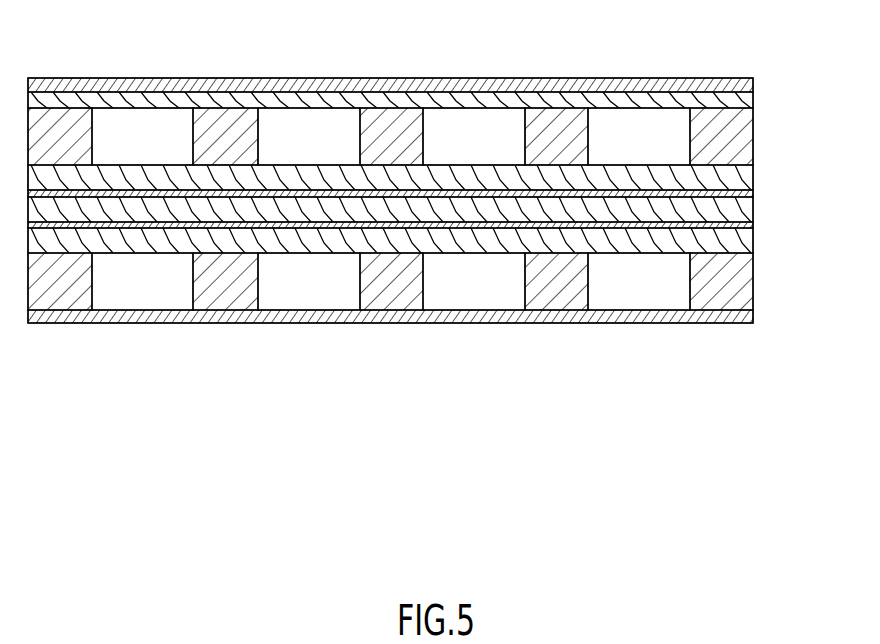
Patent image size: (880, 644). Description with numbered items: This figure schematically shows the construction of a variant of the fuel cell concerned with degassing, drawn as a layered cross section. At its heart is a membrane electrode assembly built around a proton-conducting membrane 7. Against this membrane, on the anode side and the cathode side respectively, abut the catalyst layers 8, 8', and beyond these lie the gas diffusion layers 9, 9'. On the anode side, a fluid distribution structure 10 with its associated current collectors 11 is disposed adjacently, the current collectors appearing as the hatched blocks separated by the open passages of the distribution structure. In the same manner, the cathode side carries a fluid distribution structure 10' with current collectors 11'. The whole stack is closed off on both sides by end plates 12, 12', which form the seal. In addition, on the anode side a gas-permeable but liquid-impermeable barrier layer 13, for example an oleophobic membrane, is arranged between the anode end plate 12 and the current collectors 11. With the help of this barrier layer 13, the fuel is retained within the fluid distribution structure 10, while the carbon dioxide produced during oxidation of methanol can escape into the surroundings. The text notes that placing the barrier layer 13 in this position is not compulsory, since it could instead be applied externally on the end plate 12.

The end plate 12 is at (390, 55).
The barrier layer 13 is at (753, 98).
The current collector 11 is at (423, 123).
The fluid distribution structure 10 is at (391, 90).
The gas diffusion layer 9 is at (423, 158).
The catalyst layer 8 is at (423, 179).
The proton-conducting membrane 7 is at (733, 210).
The catalyst layer 8' is at (426, 239).
The gas diffusion layer 9' is at (426, 259).
The current collector 11' is at (425, 288).
The fluid distribution structure 10' is at (391, 316).
The end plate 12' is at (390, 344).